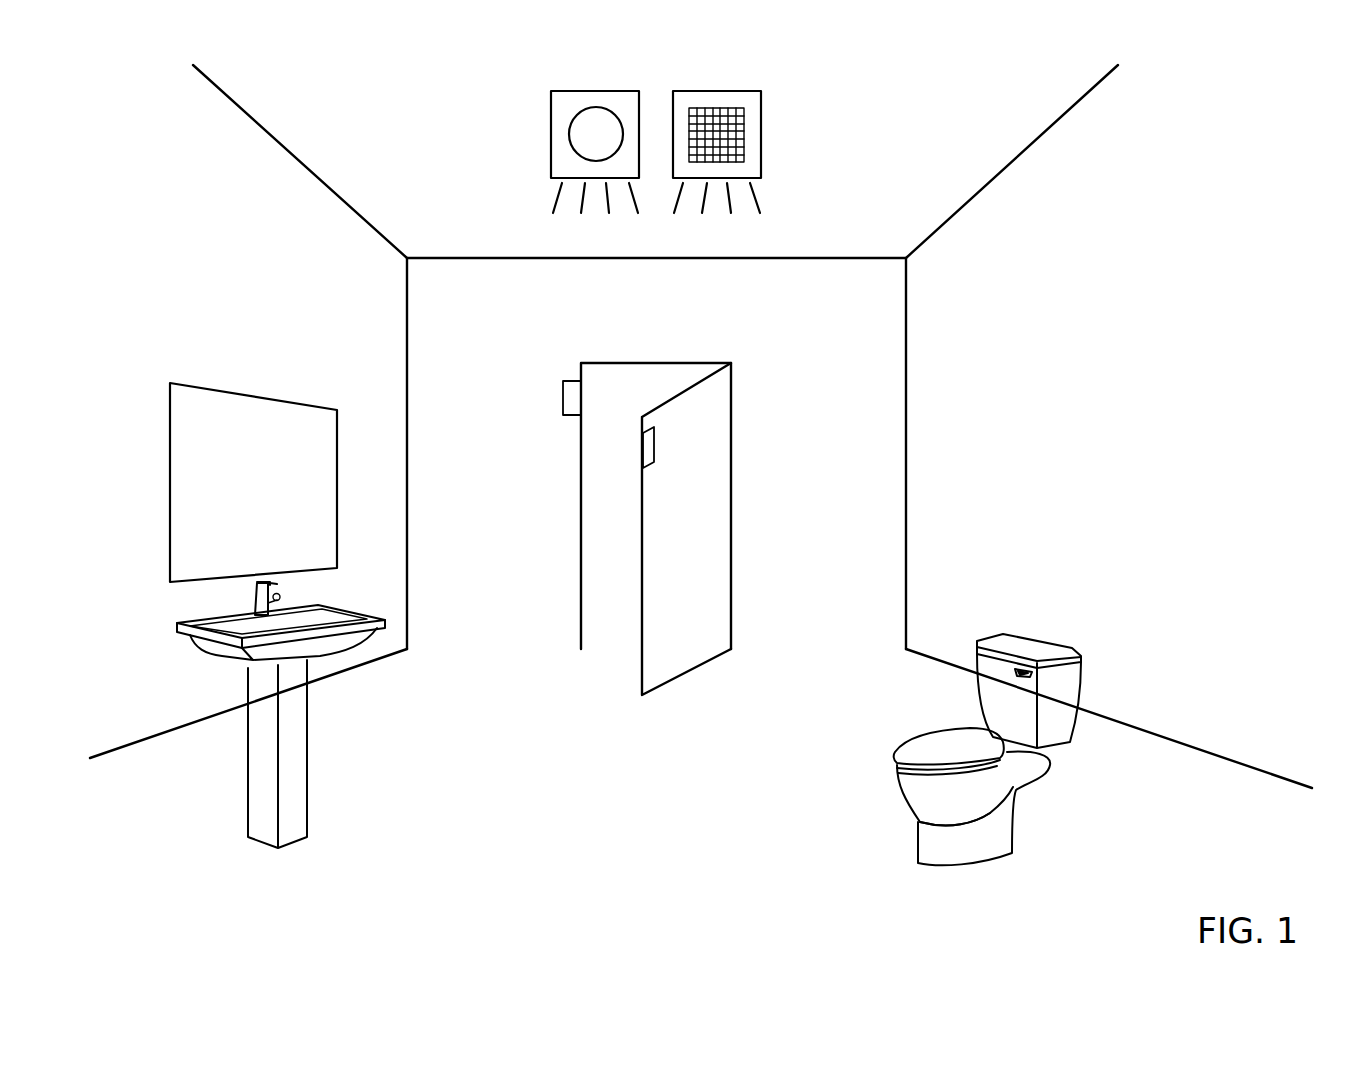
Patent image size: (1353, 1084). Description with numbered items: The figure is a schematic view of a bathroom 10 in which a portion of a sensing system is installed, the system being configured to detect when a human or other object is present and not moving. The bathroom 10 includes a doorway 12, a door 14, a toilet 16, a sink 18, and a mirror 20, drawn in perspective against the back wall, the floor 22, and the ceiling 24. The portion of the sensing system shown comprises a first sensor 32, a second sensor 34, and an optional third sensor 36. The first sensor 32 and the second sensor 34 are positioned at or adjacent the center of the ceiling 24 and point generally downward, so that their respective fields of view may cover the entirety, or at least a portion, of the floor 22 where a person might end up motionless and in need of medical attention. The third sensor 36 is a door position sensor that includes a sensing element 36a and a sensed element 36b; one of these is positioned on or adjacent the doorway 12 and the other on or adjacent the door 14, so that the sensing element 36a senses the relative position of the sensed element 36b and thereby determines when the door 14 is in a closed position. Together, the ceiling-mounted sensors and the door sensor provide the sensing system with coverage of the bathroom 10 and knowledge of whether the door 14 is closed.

The bathroom 10 is at (1123, 148).
The doorway 12 is at (655, 362).
The door 14 is at (718, 425).
The toilet 16 is at (1028, 647).
The sink 18 is at (225, 627).
The mirror 20 is at (255, 405).
The floor 22 is at (699, 812).
The ceiling 24 is at (903, 165).
The first sensor 32 is at (716, 90).
The second sensor 34 is at (594, 90).
The third sensor 36 is at (610, 441).
The sensing element 36a is at (567, 395).
The sensed element 36b is at (650, 445).